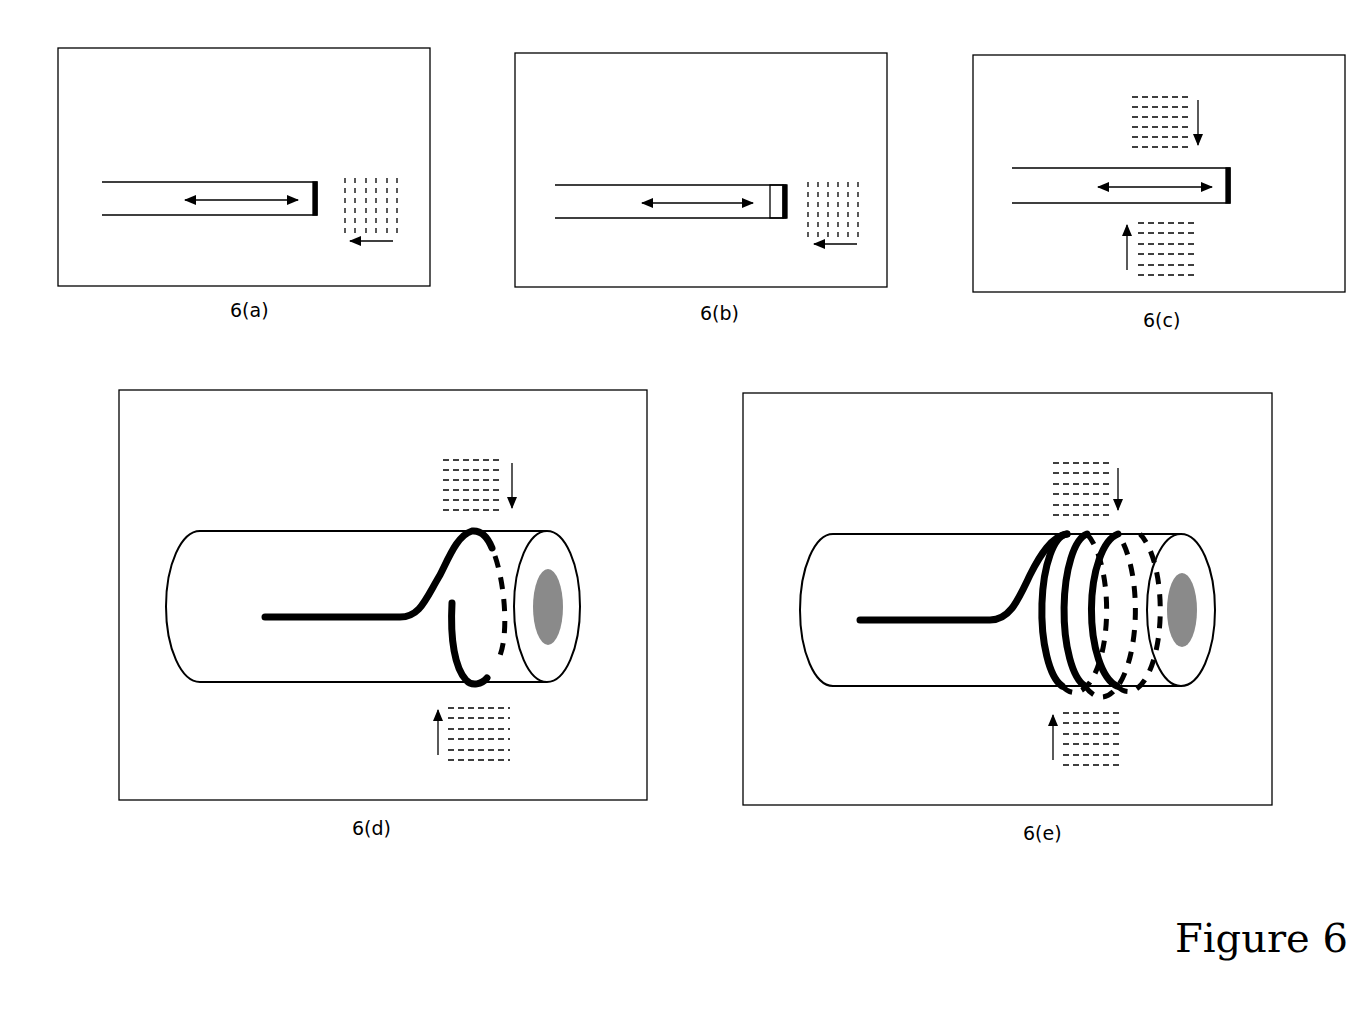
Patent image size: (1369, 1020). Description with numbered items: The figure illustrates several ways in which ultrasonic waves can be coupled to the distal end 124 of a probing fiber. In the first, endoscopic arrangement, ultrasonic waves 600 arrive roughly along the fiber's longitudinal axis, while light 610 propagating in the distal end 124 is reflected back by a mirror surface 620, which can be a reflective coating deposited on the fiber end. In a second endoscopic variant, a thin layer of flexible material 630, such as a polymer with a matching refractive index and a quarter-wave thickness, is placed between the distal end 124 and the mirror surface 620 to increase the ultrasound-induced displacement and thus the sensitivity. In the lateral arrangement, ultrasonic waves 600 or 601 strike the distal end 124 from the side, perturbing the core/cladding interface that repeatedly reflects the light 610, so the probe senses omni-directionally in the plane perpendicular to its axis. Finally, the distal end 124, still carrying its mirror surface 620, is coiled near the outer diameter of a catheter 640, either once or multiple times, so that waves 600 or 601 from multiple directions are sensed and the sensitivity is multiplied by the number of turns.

In FIG. 6A, the distal end of the probing fiber 124 is at (261, 128).
In FIG. 6B, the distal end of the probing fiber 124 is at (716, 131).
In FIG. 6C, the distal end of the probing fiber 124 is at (1091, 133).
In FIG. 6D, the distal end of the probing fiber 124 is at (413, 600).
In FIG. 6E, the distal end of the probing fiber 124 is at (1006, 605).
In FIG. 6A, the ultrasonic waves 600 is at (371, 227).
In FIG. 6B, the ultrasonic waves 600 is at (833, 229).
In FIG. 6C, the ultrasonic waves 600 is at (1142, 249).
In FIG. 6D, the ultrasonic waves 600 is at (455, 734).
In FIG. 6E, the ultrasonic waves 600 is at (1067, 739).
In FIG. 6C, the ultrasonic waves 601 is at (1187, 122).
In FIG. 6D, the ultrasonic waves 601 is at (481, 473).
In FIG. 6E, the ultrasonic waves 601 is at (1088, 477).
In FIG. 6A, the light 610 is at (223, 200).
In FIG. 6B, the light 610 is at (678, 203).
In FIG. 6C, the light 610 is at (1136, 187).
In FIG. 6A, the mirror surface 620 is at (318, 175).
In FIG. 6B, the mirror surface 620 is at (789, 181).
In FIG. 6C, the mirror surface 620 is at (1236, 189).
In FIG. 6D, the mirror surface 620 is at (458, 598).
In FIG. 6E, the mirror surface 620 is at (1092, 600).
In FIG. 6B, the layer of flexible material 630 is at (775, 183).
In FIG. 6D, the catheter 640 is at (324, 526).
In FIG. 6E, the catheter 640 is at (919, 526).